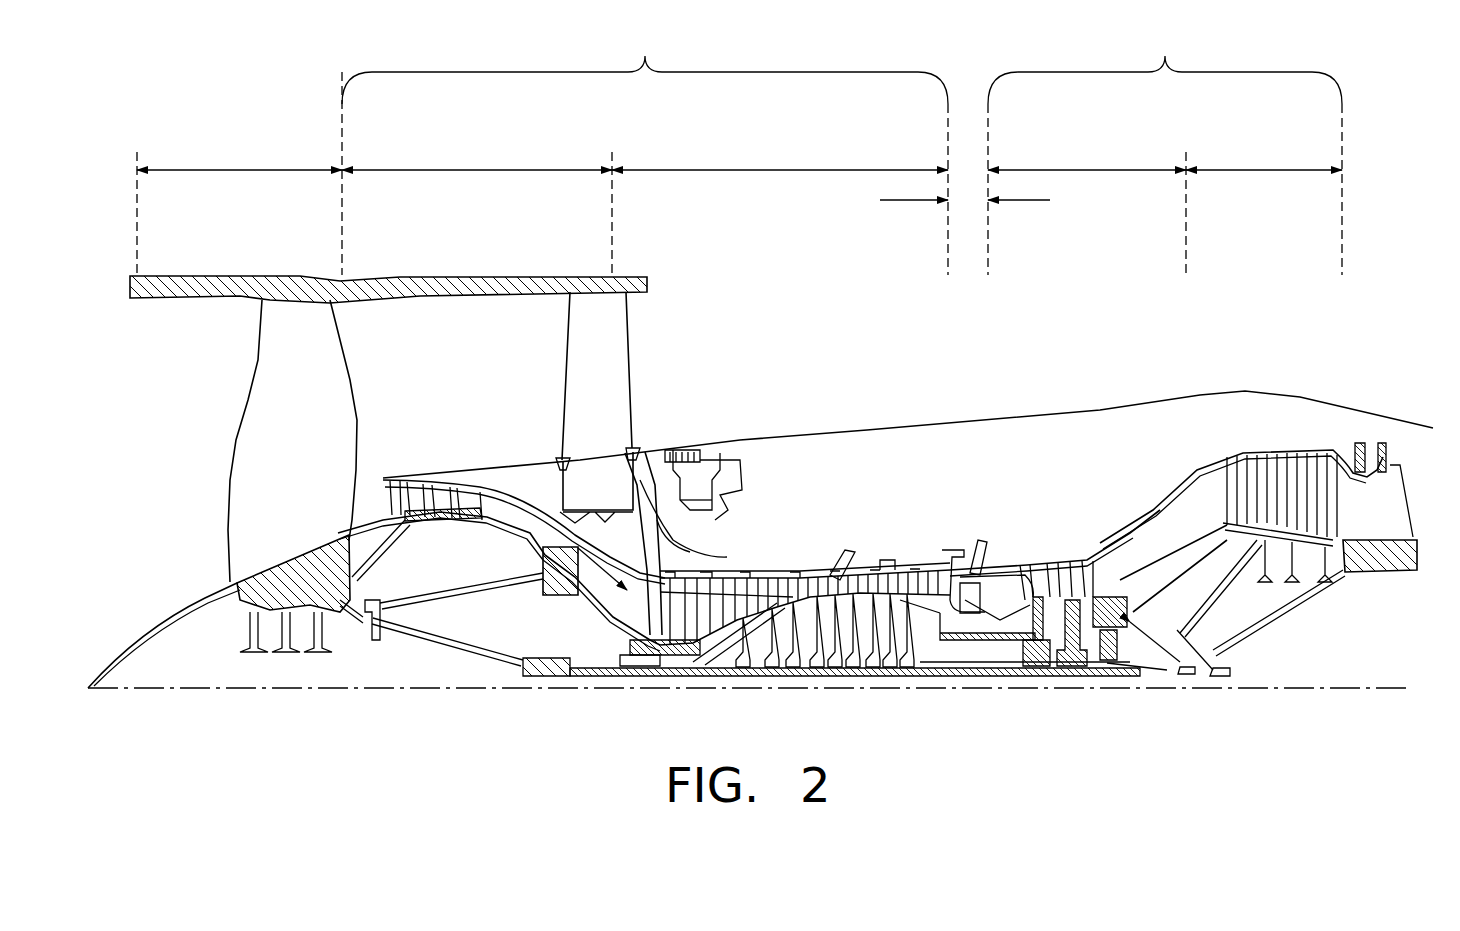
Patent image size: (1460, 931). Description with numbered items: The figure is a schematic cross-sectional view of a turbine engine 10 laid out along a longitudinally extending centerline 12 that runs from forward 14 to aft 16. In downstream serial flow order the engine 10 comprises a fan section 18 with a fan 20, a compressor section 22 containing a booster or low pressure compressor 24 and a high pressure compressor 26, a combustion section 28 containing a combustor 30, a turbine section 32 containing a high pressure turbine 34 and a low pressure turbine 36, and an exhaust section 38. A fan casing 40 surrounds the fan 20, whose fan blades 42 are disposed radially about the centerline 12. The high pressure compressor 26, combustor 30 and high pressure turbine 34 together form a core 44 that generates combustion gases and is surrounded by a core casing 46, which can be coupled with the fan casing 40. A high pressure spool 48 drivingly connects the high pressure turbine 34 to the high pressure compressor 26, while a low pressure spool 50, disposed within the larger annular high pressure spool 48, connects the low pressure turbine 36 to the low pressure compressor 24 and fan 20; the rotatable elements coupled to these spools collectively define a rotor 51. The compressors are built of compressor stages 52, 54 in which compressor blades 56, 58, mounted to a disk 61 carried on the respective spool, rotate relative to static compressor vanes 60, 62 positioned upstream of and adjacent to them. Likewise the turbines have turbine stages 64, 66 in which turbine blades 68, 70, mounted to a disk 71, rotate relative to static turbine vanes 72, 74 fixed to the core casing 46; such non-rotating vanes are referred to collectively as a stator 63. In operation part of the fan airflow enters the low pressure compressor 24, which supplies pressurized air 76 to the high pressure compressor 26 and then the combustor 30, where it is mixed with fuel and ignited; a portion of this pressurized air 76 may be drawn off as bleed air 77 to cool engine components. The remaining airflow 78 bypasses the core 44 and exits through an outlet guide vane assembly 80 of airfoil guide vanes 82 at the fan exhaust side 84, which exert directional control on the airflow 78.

The turbine engine 10 is at (1360, 195).
The centerline 12 is at (218, 692).
The forward 14 is at (172, 413).
The aft 16 is at (1454, 507).
The fan section 18 is at (240, 170).
The fan 20 is at (208, 535).
The compressor section 22 is at (645, 56).
The low pressure compressor 24 is at (478, 170).
The high pressure compressor 26 is at (778, 170).
The combustion section 28 is at (896, 200).
The combustor 30 is at (985, 555).
The turbine section 32 is at (1165, 56).
The high pressure turbine 34 is at (1086, 170).
The low pressure turbine 36 is at (1262, 170).
The exhaust section 38 is at (1440, 445).
The fan casing 40 is at (372, 277).
The fan blades 42 is at (320, 345).
The core 44 is at (905, 460).
The core casing 46 is at (1165, 525).
The HP shaft or spool 48 is at (953, 640).
The LP shaft or spool 50 is at (540, 677).
The rotor 51 is at (808, 680).
The compressor stages 52 is at (455, 412).
The compressor stages 54 is at (785, 555).
The compressor blades 56 is at (440, 478).
The compressor blades 58 is at (703, 573).
The static compressor vanes 60 is at (406, 478).
The disk 61 is at (430, 523).
The static compressor vanes 62 is at (680, 560).
The stator 63 is at (1235, 450).
The turbine stages 64 is at (1000, 525).
The turbine stages 66 is at (1270, 392).
The turbine blades 68 is at (1060, 560).
The turbine blades 70 is at (1333, 455).
The disk 71 is at (1243, 545).
The static turbine vanes 72 is at (1040, 560).
The static turbine vanes 74 is at (1312, 452).
The pressurized air 76 is at (575, 598).
The bleed air 77 is at (805, 562).
The airflow 78 is at (675, 352).
The outlet guide vane assembly 80 is at (642, 415).
The airfoil guide vanes 82 is at (566, 390).
The fan exhaust side 84 is at (648, 330).